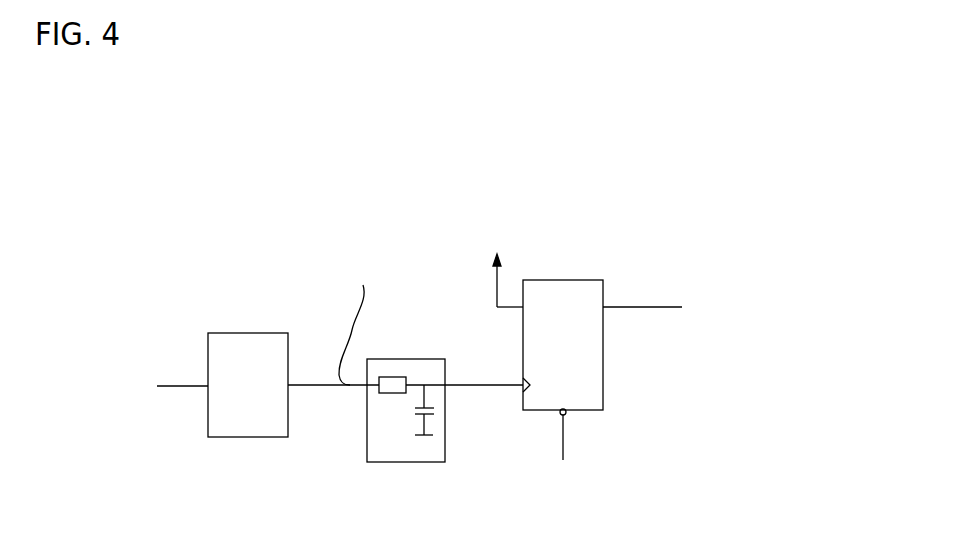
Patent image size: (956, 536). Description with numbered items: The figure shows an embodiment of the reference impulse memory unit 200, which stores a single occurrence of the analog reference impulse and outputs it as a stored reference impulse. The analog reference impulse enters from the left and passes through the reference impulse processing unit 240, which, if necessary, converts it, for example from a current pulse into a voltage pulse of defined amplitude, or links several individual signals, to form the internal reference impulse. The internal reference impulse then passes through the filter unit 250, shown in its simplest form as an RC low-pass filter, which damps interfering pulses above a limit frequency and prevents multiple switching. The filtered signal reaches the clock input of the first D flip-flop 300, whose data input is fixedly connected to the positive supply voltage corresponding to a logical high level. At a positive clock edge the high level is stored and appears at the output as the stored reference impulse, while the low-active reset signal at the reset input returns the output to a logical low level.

The reference impulse memory unit 200 is at (730, 192).
The reference impulse processing unit 240 is at (245, 333).
The filter unit 250 is at (422, 359).
The first D flip-flop 300 is at (570, 280).